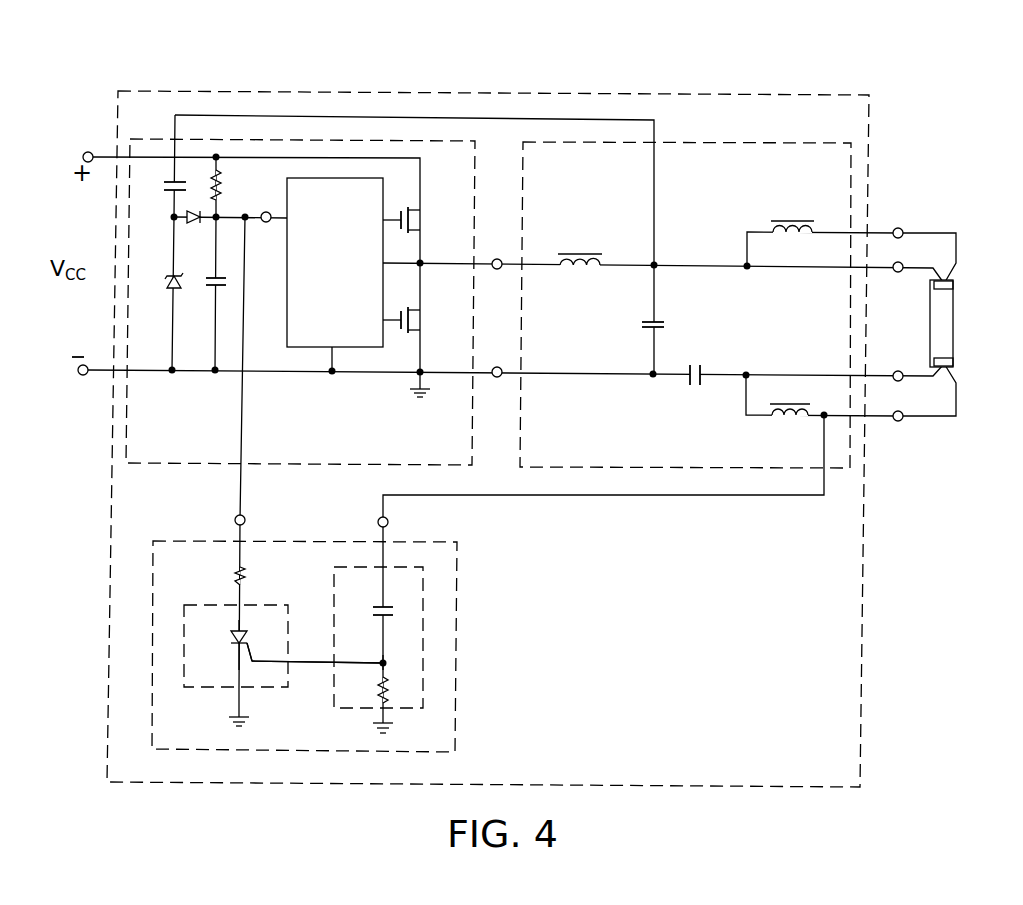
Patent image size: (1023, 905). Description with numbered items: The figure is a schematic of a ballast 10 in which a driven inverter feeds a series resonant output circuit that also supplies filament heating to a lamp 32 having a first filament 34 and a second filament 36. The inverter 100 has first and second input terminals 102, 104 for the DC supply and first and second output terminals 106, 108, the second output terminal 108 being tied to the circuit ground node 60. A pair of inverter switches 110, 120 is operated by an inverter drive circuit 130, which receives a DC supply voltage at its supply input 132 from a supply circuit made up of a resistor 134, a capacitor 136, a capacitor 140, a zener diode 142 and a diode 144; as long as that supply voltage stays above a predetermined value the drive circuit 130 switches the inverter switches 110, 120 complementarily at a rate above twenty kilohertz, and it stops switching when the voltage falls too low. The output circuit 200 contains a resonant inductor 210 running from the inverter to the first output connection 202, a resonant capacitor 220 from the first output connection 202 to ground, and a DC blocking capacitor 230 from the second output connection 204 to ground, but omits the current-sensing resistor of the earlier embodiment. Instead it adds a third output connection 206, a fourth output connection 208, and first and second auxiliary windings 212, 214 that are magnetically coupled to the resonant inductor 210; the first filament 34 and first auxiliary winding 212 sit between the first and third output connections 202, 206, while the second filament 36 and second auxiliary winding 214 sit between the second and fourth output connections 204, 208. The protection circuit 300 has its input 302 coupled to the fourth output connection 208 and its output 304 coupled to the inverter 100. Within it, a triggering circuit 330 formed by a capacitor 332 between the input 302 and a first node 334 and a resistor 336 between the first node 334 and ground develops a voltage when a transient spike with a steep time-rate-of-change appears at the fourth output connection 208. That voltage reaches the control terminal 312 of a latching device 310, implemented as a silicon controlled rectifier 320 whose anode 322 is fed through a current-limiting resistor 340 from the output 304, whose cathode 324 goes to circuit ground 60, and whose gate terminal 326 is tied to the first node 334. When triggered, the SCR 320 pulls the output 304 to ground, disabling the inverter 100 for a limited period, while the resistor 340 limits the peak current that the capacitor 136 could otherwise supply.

The ballast 10 is at (767, 727).
The lamp 32 is at (948, 322).
The first filament 34 is at (957, 286).
The second filament 36 is at (957, 362).
The circuit ground node 60 is at (424, 383).
The inverter 100 is at (345, 431).
The first input terminal 102 is at (84, 154).
The second input terminal 104 is at (80, 373).
The first output terminal 106 is at (497, 259).
The second output terminal 108 is at (497, 377).
The inverter switch 110 is at (414, 218).
The inverter switch 120 is at (414, 320).
The inverter drive circuit 130 is at (316, 328).
The supply input 132 is at (266, 222).
The resistor 134 is at (220, 194).
The capacitor 136 is at (209, 287).
The capacitor 140 is at (168, 192).
The zener diode 142 is at (165, 282).
The diode 144 is at (193, 222).
The output circuit 200 is at (718, 441).
The first output connection 202 is at (897, 273).
The second output connection 204 is at (897, 371).
The third output connection 206 is at (898, 228).
The fourth output connection 208 is at (897, 421).
The resonant inductor 210 is at (579, 270).
The first auxiliary winding 212 is at (782, 238).
The second auxiliary winding 214 is at (780, 420).
The resonant capacitor 220 is at (660, 320).
The DC blocking capacitor 230 is at (700, 372).
The protection circuit 300 is at (316, 740).
The protection circuit input 302 is at (388, 522).
The protection circuit output 304 is at (235, 520).
The latching device 310 is at (266, 605).
The control terminal 312 is at (312, 666).
The silicon controlled rectifier 320 is at (229, 636).
The anode 322 is at (236, 626).
The cathode 324 is at (236, 665).
The gate terminal 326 is at (296, 637).
The triggering circuit 330 is at (383, 593).
The capacitor 332 is at (387, 607).
The first node 334 is at (385, 663).
The resistor 336 is at (387, 693).
The resistor 340 is at (242, 570).